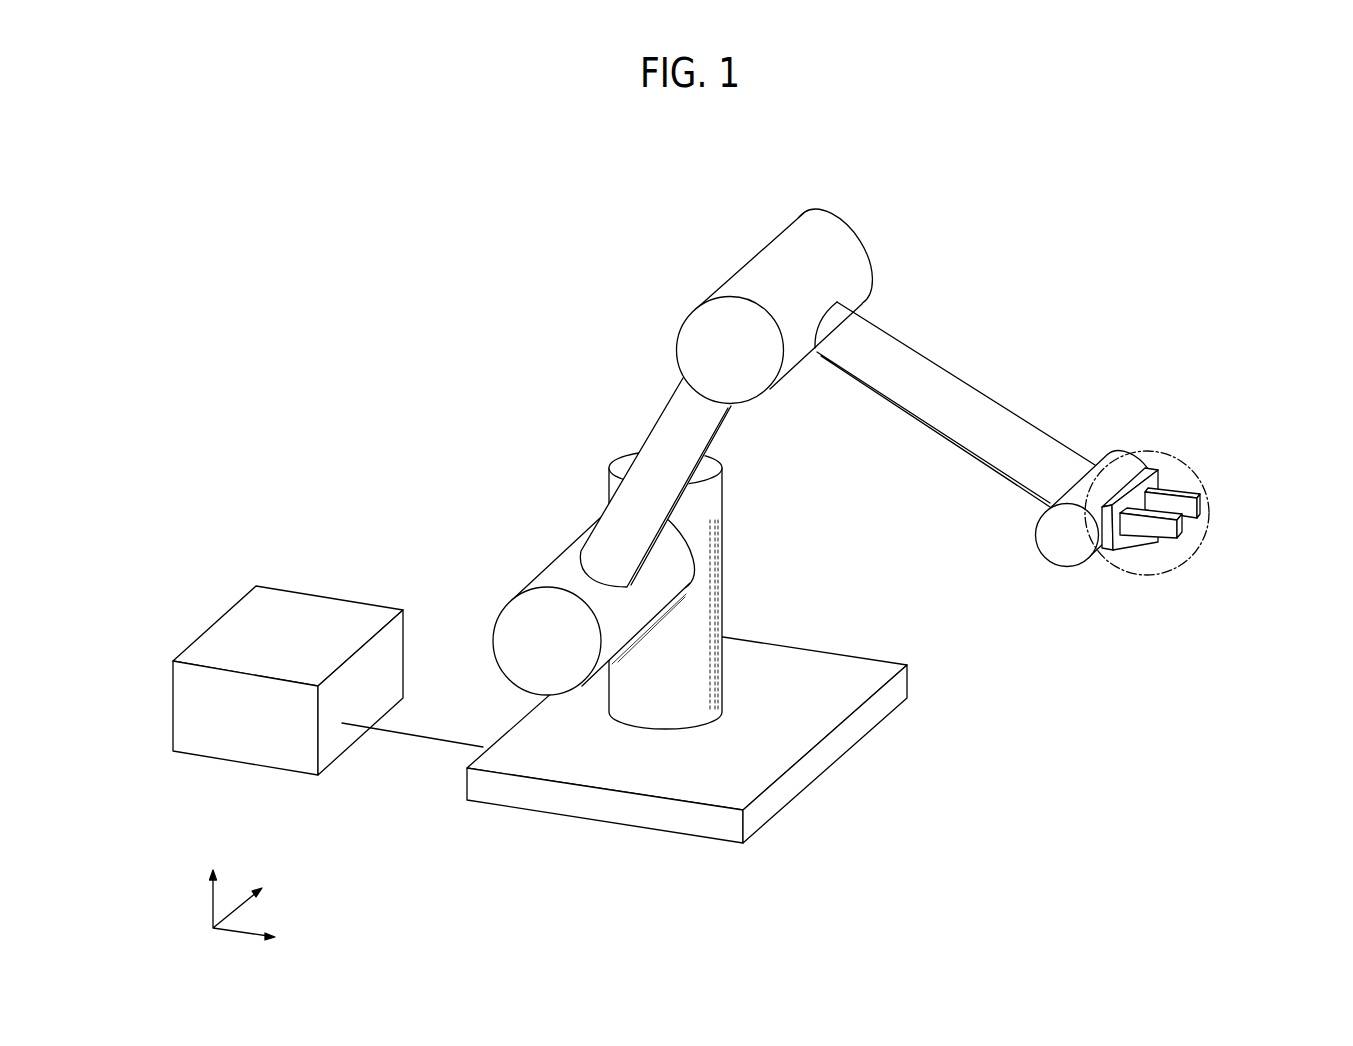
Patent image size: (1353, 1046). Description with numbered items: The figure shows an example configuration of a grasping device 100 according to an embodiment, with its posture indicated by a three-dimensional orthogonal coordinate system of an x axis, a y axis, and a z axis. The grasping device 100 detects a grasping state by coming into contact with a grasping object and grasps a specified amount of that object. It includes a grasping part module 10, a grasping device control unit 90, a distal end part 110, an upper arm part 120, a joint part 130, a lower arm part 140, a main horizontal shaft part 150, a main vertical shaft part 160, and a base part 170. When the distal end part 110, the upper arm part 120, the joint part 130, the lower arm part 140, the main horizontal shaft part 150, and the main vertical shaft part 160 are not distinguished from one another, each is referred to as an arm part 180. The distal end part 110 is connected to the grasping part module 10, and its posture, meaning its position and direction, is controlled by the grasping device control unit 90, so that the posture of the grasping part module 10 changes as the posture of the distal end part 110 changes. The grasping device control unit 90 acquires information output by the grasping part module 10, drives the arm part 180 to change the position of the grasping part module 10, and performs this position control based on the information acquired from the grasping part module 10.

The grasping part module 10 is at (1210, 471).
The grasping device control unit 90 is at (242, 610).
The grasping device 100 is at (228, 405).
The distal end part 110 is at (1068, 556).
The upper arm part 120 is at (985, 407).
The joint part 130 is at (858, 238).
The lower arm part 140 is at (670, 410).
The main horizontal shaft part 150 is at (550, 572).
The main vertical shaft part 160 is at (722, 540).
The base part 170 is at (835, 656).
The arm part 180 is at (818, 452).